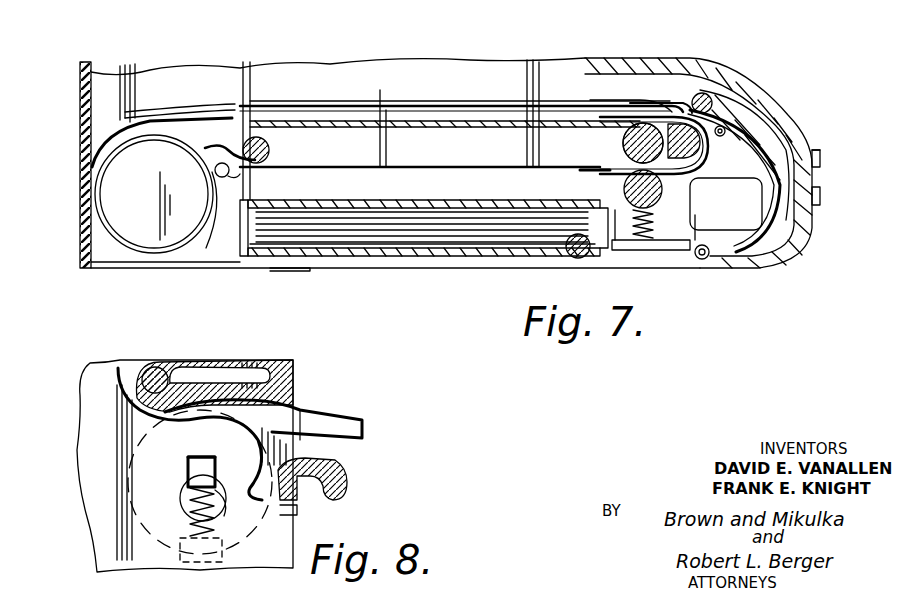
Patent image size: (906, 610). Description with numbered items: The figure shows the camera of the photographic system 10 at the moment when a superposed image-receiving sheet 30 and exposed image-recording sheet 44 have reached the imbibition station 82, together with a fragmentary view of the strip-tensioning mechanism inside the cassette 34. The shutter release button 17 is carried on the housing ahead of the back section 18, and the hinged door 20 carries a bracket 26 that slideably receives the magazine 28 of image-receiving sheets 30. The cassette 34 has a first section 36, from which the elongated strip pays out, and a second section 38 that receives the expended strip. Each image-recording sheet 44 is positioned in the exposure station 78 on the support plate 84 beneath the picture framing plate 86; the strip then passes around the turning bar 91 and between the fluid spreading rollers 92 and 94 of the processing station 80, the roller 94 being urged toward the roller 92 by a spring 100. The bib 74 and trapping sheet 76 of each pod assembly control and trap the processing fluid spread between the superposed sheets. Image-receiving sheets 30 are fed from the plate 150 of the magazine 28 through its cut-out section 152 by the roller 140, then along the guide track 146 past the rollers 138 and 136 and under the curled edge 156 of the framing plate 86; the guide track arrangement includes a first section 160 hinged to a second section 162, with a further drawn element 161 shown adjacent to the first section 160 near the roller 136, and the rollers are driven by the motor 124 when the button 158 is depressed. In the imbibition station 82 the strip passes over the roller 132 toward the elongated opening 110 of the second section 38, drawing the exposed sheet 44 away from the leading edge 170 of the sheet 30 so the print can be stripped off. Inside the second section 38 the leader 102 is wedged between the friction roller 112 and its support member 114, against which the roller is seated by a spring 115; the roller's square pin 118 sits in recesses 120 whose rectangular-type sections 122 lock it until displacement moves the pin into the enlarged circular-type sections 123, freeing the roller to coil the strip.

In FIG. 7, the system 10 is at (72, 142).
In FIG. 7, the shutter release button 17 is at (821, 166).
In FIG. 7, the back section 18 is at (820, 153).
In FIG. 7, the hinged door 20 is at (272, 264).
In FIG. 7, the bracket 26 is at (326, 206).
In FIG. 7, the magazine 28 is at (250, 249).
In FIG. 7, the image-receiving sheets 30 is at (474, 166).
In FIG. 7, the cassette 34 is at (246, 60).
In FIG. 7, the first section 36 is at (225, 112).
In FIG. 7, the second section 38 is at (80, 181).
In FIG. 7, the image-recording sheets 44 is at (412, 106).
In FIG. 7, the bib 74 is at (262, 139).
In FIG. 7, the trapping sheet 76 is at (260, 111).
In FIG. 7, the exposure station 78 is at (548, 96).
In FIG. 7, the processing station 80 is at (615, 162).
In FIG. 7, the imbibition station 82 is at (440, 162).
In FIG. 7, the support plate 84 is at (485, 127).
In FIG. 7, the picture framing plate 86 is at (470, 104).
In FIG. 7, the turning bar 91 is at (676, 126).
In FIG. 7, the fluid spreading roller 92 is at (630, 125).
In FIG. 7, the fluid spreading roller 94 is at (680, 226).
In FIG. 7, the spring 100 is at (634, 246).
In FIG. 7, the leader 102 is at (200, 234).
In FIG. 8, the leader 102 is at (300, 408).
In FIG. 7, the elongated opening 110 is at (190, 118).
In FIG. 8, the elongated opening 110 is at (318, 447).
In FIG. 7, the friction roller 112 is at (240, 177).
In FIG. 8, the friction roller 112 is at (286, 505).
In FIG. 7, the support member 114 is at (208, 150).
In FIG. 8, the support member 114 is at (160, 368).
In FIG. 8, the spring 115 is at (186, 504).
In FIG. 8, the square pin 118 is at (204, 455).
In FIG. 8, the recesses 120 is at (180, 493).
In FIG. 8, the rectangular-type sections 122 is at (199, 457).
In FIG. 8, the enlarged circular-type sections 123 is at (224, 508).
In FIG. 7, the motor 124 is at (800, 234).
In FIG. 7, the roller 132 is at (270, 149).
In FIG. 7, the roller 136 is at (705, 92).
In FIG. 7, the roller 138 is at (708, 258).
In FIG. 7, the roller 140 is at (580, 258).
In FIG. 7, the guide track 146 is at (800, 132).
In FIG. 7, the plate 150 is at (438, 245).
In FIG. 7, the cut-out section 152 is at (570, 258).
In FIG. 7, the curled edge 156 is at (681, 98).
In FIG. 7, the button 158 is at (822, 196).
In FIG. 7, the first section 160 is at (726, 126).
In FIG. 7, the link 161 is at (734, 110).
In FIG. 7, the second section 162 is at (712, 174).
In FIG. 7, the leading edge 170 is at (222, 171).